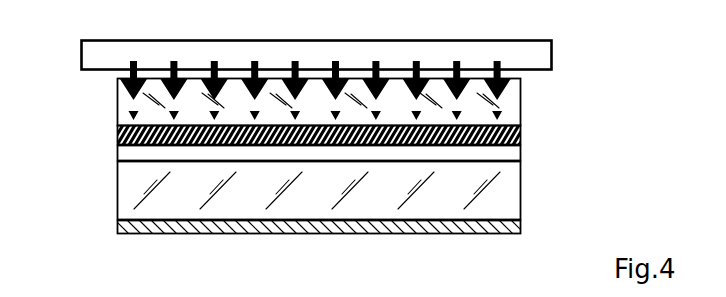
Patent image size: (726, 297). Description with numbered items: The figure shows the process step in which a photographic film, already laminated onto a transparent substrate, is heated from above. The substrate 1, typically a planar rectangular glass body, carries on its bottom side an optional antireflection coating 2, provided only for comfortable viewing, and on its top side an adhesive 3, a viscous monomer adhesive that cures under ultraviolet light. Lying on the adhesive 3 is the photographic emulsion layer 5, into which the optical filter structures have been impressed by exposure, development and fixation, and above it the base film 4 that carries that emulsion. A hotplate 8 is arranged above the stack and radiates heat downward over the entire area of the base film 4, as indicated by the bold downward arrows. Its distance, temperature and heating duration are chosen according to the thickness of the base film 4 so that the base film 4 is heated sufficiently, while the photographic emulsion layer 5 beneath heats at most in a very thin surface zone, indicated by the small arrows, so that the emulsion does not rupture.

The substrate 1 is at (516, 207).
The antireflection coating 2 is at (117, 229).
The adhesive 3 is at (118, 154).
The base film 4 is at (512, 103).
The photographic emulsion layer 5 is at (522, 137).
The hotplate 8 is at (90, 63).